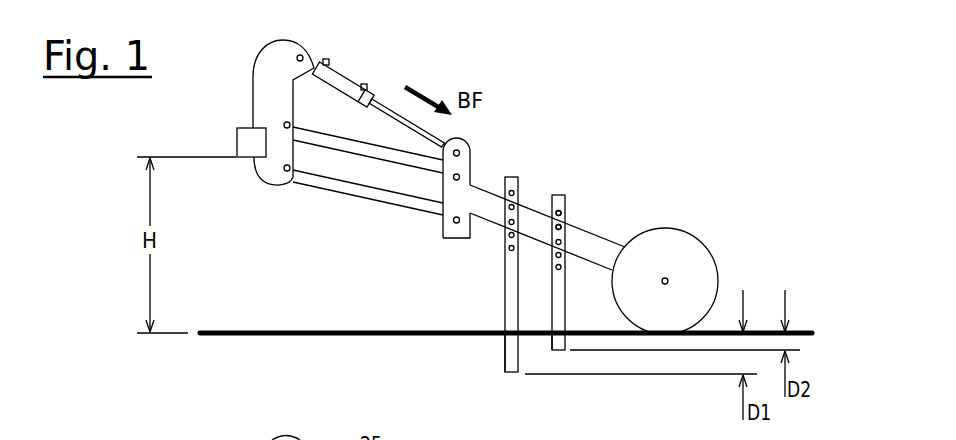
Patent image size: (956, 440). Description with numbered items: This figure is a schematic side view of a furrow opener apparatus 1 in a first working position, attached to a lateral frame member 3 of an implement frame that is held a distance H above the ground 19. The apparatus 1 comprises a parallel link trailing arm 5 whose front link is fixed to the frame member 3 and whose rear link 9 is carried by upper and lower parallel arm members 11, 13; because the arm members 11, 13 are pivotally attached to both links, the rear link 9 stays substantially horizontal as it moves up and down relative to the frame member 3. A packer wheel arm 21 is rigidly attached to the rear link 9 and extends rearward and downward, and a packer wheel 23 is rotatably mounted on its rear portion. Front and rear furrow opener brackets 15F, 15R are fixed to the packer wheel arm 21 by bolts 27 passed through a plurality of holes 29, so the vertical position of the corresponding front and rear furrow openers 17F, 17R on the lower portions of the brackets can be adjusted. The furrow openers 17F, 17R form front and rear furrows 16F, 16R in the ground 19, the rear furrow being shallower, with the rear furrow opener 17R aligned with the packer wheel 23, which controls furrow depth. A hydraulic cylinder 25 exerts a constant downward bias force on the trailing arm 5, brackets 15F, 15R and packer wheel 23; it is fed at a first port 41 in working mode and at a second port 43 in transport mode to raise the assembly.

The furrow opener apparatus 1 is at (573, 78).
The lateral frame member 3 is at (237, 137).
The parallel link trailing arm 5 is at (323, 222).
The rear link 9 is at (470, 152).
The upper parallel arm member 11 is at (363, 153).
The lower parallel arm member 13 is at (384, 201).
The front furrow opener bracket 15F is at (505, 283).
The rear furrow opener bracket 15R is at (552, 282).
The front furrow 16F is at (623, 363).
The rear furrow 16R is at (710, 343).
The front furrow opener 17F is at (503, 370).
The rear furrow opener 17R is at (547, 347).
The ground 19 is at (288, 333).
The packer wheel arm 21 is at (597, 236).
The packer wheel 23 is at (696, 233).
The hydraulic cylinder 25 is at (343, 70).
The bolts 27 is at (567, 227).
The holes 29 is at (559, 211).
The first port 41 is at (327, 63).
The second port 43 is at (364, 87).